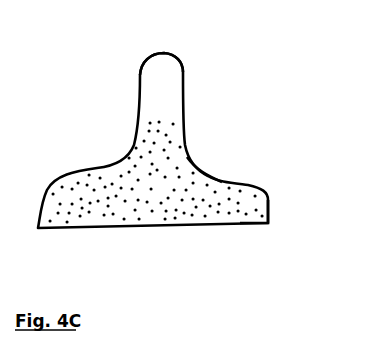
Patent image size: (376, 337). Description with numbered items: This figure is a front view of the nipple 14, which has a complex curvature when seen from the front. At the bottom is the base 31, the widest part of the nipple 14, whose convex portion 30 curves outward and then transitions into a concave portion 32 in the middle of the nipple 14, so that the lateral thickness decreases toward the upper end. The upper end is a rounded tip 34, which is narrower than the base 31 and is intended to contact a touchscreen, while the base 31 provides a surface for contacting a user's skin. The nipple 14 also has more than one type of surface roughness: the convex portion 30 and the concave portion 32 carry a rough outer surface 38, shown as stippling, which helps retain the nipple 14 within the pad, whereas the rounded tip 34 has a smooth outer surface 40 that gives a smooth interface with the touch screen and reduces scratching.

The nipple 14 is at (196, 127).
The convex portion 30 is at (270, 203).
The base 31 is at (273, 223).
The concave portion 32 is at (203, 163).
The rounded tip 34 is at (181, 57).
The rough outer surface 38 is at (145, 189).
The smooth outer surface 40 is at (162, 88).